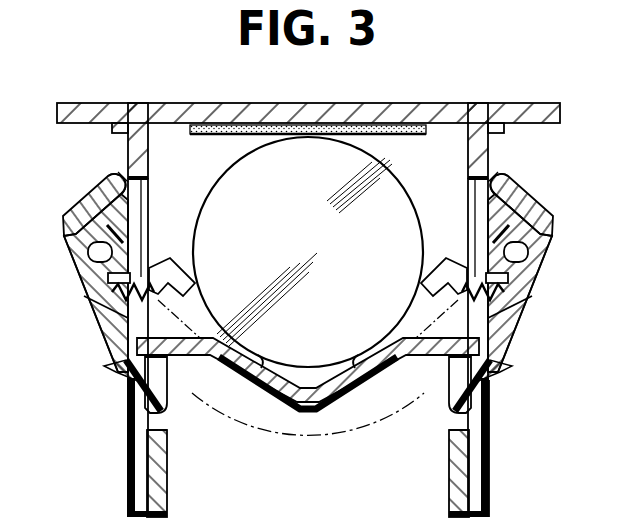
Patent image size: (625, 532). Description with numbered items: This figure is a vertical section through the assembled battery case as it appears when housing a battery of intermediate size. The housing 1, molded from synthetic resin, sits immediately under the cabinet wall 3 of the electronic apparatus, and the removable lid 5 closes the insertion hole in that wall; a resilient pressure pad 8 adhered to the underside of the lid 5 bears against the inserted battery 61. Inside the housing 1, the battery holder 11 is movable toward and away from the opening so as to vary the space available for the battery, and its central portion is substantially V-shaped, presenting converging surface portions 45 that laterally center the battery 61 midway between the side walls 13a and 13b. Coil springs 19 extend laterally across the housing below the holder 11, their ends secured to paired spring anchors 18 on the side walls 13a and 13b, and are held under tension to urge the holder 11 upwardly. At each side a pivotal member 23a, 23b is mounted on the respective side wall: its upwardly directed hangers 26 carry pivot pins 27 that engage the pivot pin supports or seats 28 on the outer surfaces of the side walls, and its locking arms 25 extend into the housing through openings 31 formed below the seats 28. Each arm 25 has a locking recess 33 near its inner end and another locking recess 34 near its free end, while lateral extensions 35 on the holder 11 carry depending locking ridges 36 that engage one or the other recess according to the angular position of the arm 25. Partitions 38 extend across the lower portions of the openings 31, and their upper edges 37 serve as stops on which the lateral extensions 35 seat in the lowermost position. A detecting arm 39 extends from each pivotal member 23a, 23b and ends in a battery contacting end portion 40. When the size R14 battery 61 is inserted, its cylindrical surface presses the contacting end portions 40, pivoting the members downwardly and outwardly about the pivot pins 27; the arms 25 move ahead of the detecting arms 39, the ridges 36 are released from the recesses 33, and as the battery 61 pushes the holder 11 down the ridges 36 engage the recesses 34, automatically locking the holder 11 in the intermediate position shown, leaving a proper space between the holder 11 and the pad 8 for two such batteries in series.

The housing 1 is at (490, 500).
The cabinet wall 3 is at (99, 108).
The lid 5 is at (404, 112).
The resilient pressure pad 8 is at (426, 134).
The battery holder 11 is at (394, 340).
The side wall 13a is at (126, 496).
The side wall 13b is at (490, 432).
The spring anchors 18 is at (96, 304).
The coil springs 19 is at (300, 436).
The pivotal member 23a is at (66, 220).
The pivotal member 23b is at (553, 230).
The arms 25 is at (103, 320).
The hangers 26 is at (82, 205).
The pivot pins 27 is at (116, 170).
The pivot pin supports or seats 28 is at (104, 178).
The openings 31 is at (130, 430).
The locking recess 33 is at (88, 250).
The locking recess 34 is at (164, 385).
The lateral extensions 35 is at (132, 346).
The locking ridges 36 is at (124, 386).
The upper edges 37 is at (160, 433).
The partitions 38 is at (167, 476).
The detecting arm 39 is at (108, 277).
The battery contacting end portion 40 is at (178, 268).
The surface portions 45 is at (248, 385).
The battery 61 is at (322, 130).